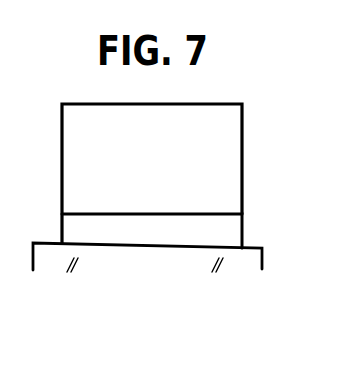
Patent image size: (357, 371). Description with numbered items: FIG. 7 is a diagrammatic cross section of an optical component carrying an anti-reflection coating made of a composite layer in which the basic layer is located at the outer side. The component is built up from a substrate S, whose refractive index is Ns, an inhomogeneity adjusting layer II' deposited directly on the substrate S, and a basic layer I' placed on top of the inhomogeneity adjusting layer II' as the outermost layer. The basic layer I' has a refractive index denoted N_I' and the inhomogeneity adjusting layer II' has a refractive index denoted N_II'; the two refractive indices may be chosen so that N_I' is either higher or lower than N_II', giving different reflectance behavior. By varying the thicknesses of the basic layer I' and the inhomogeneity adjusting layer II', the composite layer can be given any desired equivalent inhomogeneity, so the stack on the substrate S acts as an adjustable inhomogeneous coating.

The basic layer I' is at (167, 173).
The inhomogeneity adjusting layer II' is at (167, 231).
The substrate S is at (253, 267).